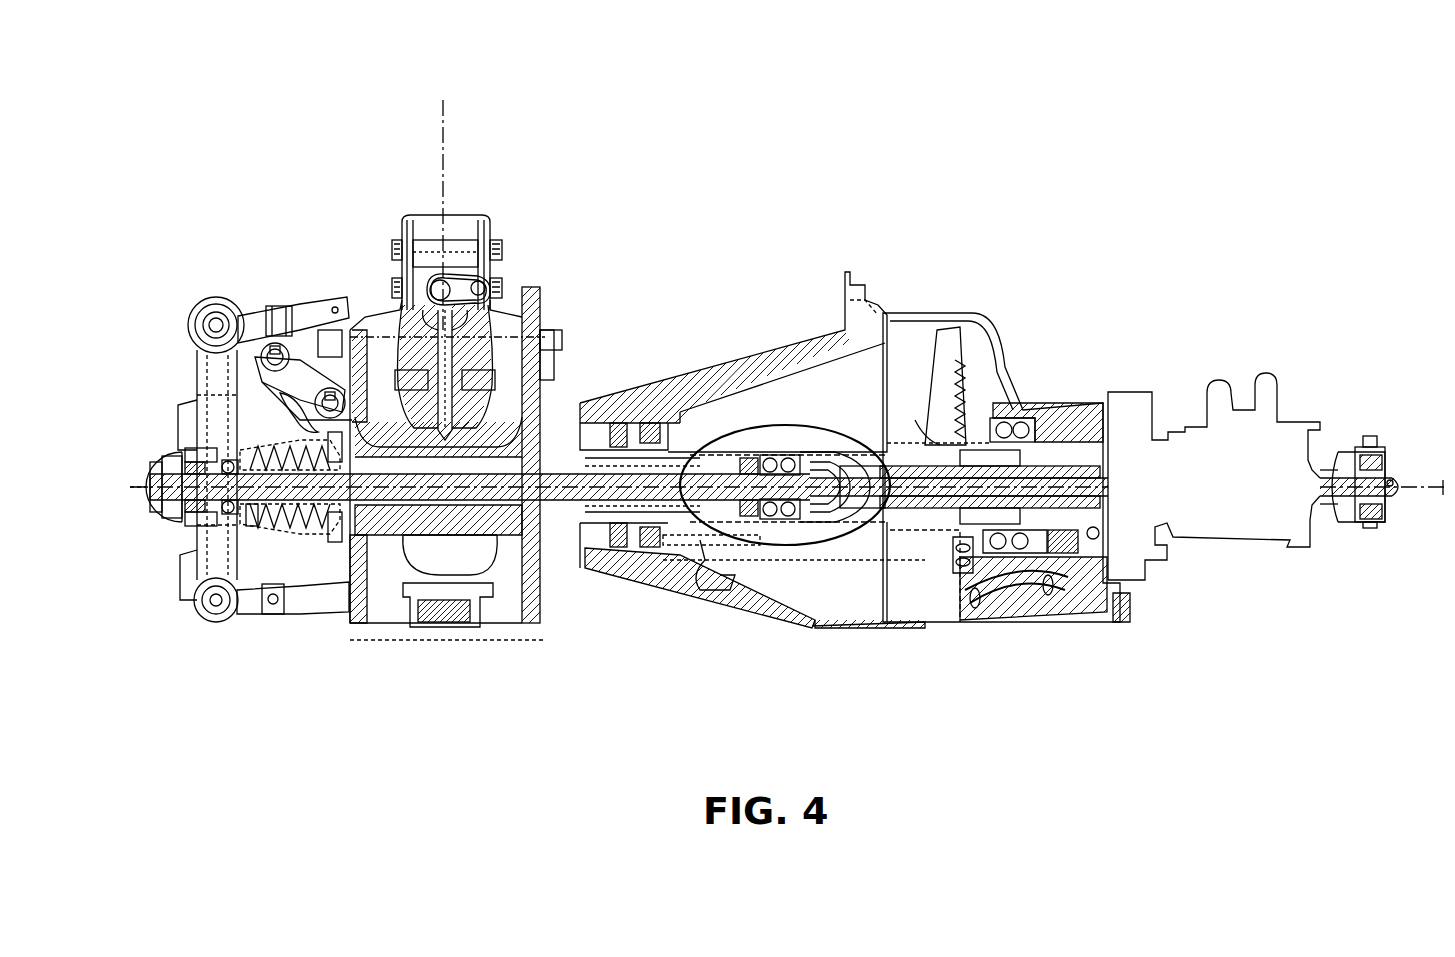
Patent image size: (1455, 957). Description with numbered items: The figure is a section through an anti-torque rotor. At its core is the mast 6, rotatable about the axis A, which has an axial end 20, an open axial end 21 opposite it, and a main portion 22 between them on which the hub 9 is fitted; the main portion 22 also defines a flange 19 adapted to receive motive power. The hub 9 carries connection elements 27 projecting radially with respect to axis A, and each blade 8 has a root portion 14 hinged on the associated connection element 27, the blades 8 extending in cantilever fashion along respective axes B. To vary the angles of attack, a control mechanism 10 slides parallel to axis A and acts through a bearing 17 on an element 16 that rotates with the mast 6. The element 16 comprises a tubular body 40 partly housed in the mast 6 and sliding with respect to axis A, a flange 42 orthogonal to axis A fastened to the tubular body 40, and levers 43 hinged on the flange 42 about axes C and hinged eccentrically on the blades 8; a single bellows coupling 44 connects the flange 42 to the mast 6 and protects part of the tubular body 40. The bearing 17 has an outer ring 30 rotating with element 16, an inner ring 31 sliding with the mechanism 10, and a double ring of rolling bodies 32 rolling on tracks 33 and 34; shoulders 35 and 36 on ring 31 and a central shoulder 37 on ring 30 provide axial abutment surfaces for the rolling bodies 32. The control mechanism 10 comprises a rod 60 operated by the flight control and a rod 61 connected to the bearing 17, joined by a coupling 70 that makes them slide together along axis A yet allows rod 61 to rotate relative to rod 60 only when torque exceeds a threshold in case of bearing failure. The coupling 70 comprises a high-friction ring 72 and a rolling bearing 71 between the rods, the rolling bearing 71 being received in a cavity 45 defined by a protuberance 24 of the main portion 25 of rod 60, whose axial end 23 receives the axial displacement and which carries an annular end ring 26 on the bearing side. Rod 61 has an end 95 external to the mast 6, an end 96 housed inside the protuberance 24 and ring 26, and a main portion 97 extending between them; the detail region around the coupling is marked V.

The mast 6 is at (567, 527).
The blades 8 is at (428, 238).
The hub 9 is at (549, 436).
The control mechanism 10 is at (762, 344).
The root portion 14 is at (467, 618).
The element 16 is at (212, 290).
The bearing 17 is at (180, 405).
The flange 19 is at (930, 392).
The axial end 20 is at (1091, 440).
The axial end 21 is at (337, 458).
The main portion 22 is at (896, 530).
The axial end 23 is at (1396, 480).
The protuberance 24 is at (840, 494).
The main portion 25 is at (1027, 492).
The annular end ring 26 is at (748, 462).
The connection elements 27 is at (532, 320).
The outer ring 30 is at (240, 432).
The inner ring 31 is at (208, 466).
The rolling bodies 32 is at (246, 470).
The track 33 is at (222, 505).
The track 34 is at (205, 510).
The shoulder 35 is at (205, 452).
The shoulder 36 is at (232, 470).
The shoulder 37 is at (224, 448).
The tubular body 40 is at (305, 502).
The flange 42 is at (202, 340).
The levers 43 is at (307, 300).
The bellows coupling 44 is at (260, 524).
The cavity 45 is at (778, 462).
The rod 60 is at (1356, 484).
The rod 61 is at (600, 472).
The coupling 70 is at (792, 437).
The rolling bearing 71 is at (748, 400).
The ring 72 is at (742, 503).
The end 95 is at (148, 470).
The end 96 is at (712, 508).
The main portion 97 is at (380, 470).
The axis A is at (1443, 492).
The axes B is at (445, 112).
The axes C is at (220, 323).
The detail V is at (785, 472).